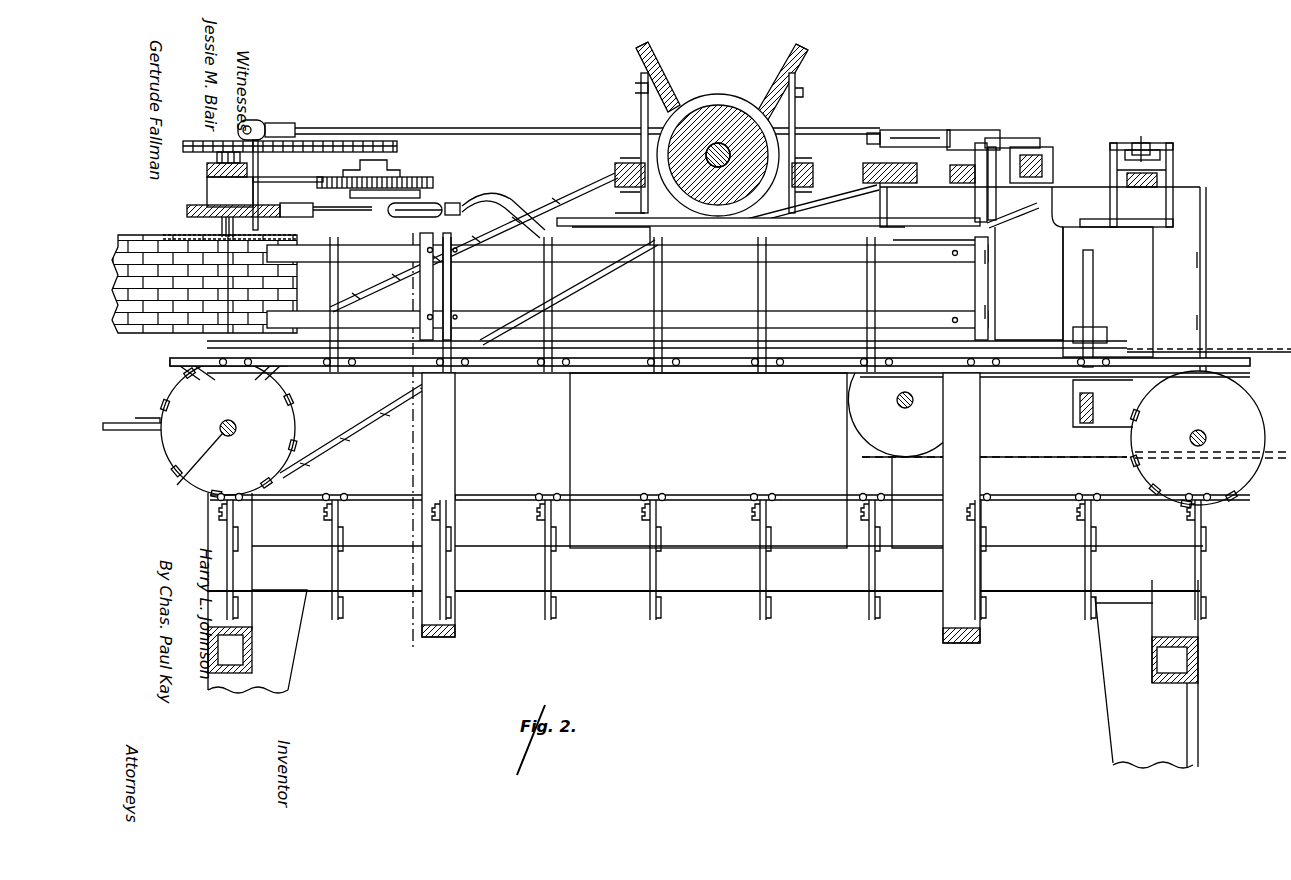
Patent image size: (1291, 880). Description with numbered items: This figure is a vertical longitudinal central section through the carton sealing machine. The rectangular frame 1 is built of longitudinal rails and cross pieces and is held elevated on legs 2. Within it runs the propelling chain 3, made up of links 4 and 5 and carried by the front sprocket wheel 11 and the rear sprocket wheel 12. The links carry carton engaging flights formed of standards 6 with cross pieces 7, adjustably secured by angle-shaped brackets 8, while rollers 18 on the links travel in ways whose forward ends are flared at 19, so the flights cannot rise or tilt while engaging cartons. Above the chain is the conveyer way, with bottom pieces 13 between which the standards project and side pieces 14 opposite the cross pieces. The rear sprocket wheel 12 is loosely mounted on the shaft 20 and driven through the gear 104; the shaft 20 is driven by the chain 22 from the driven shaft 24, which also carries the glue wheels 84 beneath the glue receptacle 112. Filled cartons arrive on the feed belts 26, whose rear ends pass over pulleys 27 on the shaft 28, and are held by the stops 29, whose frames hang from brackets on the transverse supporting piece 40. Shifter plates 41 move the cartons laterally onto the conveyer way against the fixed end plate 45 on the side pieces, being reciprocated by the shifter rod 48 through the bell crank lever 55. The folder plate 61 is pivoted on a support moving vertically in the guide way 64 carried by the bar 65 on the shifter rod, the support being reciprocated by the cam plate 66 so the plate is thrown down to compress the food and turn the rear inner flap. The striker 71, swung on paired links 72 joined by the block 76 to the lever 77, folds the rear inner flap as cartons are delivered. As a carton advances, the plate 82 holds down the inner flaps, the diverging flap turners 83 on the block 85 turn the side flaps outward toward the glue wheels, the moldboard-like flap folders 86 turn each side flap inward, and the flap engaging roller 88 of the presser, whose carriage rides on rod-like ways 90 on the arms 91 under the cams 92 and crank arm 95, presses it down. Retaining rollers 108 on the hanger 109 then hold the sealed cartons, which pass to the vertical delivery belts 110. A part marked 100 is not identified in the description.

The frame 1 is at (722, 585).
The legs 2 is at (290, 673).
The propelling chain 3 is at (710, 374).
The links 4 is at (454, 373).
The links 5 is at (466, 373).
The standard 6 is at (452, 285).
The cross pieces 7 is at (452, 260).
The angle-shaped brackets 8 is at (406, 237).
The sprocket wheel 11 is at (1237, 420).
The sprocket wheel 12 is at (190, 452).
The bottom pieces 13 is at (635, 348).
The side pieces 14 is at (706, 310).
The rollers 18 is at (345, 370).
The flared ends of the ways 19 is at (1252, 377).
The shaft 20 is at (193, 457).
The chain 22 is at (575, 185).
The driven shaft 24 is at (748, 148).
The feed belts 26 is at (1235, 347).
The pulleys 27 is at (865, 400).
The shaft 28 is at (896, 405).
The stops 29 is at (1102, 328).
The supporting piece 40 is at (1080, 415).
The shifter plates 41 is at (1043, 280).
The fixed end plate 45 is at (985, 320).
The shifter rod 48 is at (1042, 160).
The bell crank lever 55 is at (981, 143).
The folder plate 61 is at (1032, 205).
The guide way 64 is at (992, 150).
The bar 65 is at (1010, 140).
The cam plate 66 is at (957, 130).
The striker 71 is at (1175, 222).
The links 72 is at (1170, 180).
The block 76 is at (1155, 148).
The lever 77 is at (1138, 143).
The plate 82 is at (937, 218).
The flap turners 83 is at (830, 197).
The glue wheels 84 is at (770, 120).
The block 85 is at (886, 162).
The flap folders 86 is at (500, 210).
The flap engaging roller 88 is at (430, 202).
The rod-like ways 90 is at (318, 205).
The arms 91 is at (452, 203).
The cams 92 is at (416, 177).
The crank arm 95 is at (418, 192).
The chain 100 is at (319, 140).
The gear 104 is at (172, 363).
The retaining rollers 108 is at (267, 208).
The hanger 109 is at (215, 195).
The belts 110 is at (150, 325).
The receptacle 112 is at (802, 48).